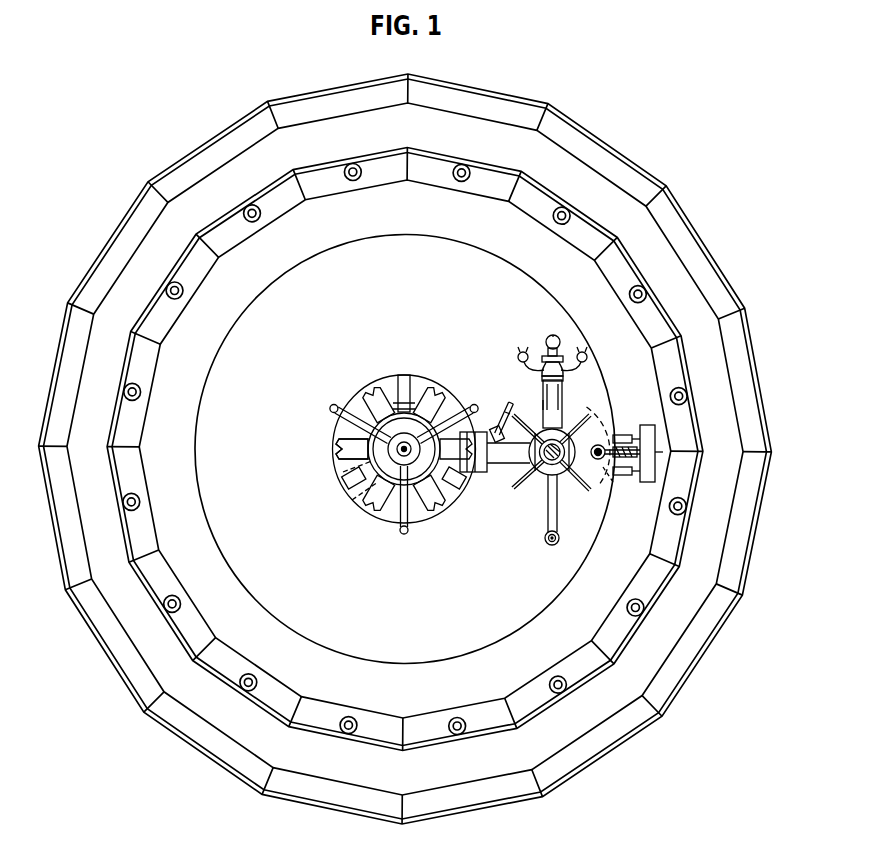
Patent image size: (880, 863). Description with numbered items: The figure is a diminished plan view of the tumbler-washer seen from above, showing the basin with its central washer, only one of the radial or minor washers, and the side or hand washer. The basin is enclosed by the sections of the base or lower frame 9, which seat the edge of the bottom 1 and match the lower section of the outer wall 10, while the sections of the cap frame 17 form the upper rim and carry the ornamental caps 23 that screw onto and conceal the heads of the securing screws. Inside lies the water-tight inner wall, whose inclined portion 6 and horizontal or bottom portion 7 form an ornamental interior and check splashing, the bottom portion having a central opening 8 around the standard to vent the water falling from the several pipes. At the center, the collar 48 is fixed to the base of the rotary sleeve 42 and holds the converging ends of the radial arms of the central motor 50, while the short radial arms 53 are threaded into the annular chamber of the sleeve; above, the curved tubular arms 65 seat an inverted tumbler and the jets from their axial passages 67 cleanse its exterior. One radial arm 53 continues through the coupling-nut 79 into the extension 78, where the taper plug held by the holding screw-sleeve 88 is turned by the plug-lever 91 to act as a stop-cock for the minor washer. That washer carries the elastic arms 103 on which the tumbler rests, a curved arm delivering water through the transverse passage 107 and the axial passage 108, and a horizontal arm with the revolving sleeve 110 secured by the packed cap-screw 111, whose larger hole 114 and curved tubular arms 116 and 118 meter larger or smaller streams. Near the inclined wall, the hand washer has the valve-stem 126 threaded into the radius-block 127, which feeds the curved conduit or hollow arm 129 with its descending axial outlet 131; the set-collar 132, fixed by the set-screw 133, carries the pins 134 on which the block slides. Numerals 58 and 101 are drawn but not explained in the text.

The bottom 1 is at (404, 449).
The inclined portion of inner wall 6 is at (405, 449).
The horizontal or bottom portion of inner wall 7 is at (404, 449).
The central opening 8 is at (337, 453).
The sections of the base or lower frame 9 is at (405, 449).
The lower section of the outer wall 10 is at (404, 448).
The sections of the upper or cap frame 17 is at (405, 449).
The ornamental caps 23 is at (139, 496).
The sleeve 42 is at (354, 498).
The collar 48 is at (344, 475).
The radial arms of the central motor 50 is at (405, 478).
The short radial arms 53 is at (404, 449).
The hub ring 58 is at (404, 449).
The tubular arms 65 is at (337, 416).
The axial passage 67 is at (330, 408).
The extension 78 is at (485, 452).
The coupling-nut 79 is at (483, 468).
The holding screw-sleeve 88 is at (508, 415).
The plug-lever 91 is at (503, 397).
The secondary hub 101 is at (558, 470).
The elastic arms 103 is at (550, 451).
The transverse passage 107 is at (548, 501).
The axial passage 108 is at (559, 538).
The sleeve 110 is at (553, 381).
The packed cap-screw 111 is at (553, 329).
The larger hole 114 is at (543, 404).
The curved tubular arm 116 is at (525, 370).
The curved tubular arm 118 is at (580, 370).
The valve-stem 126 is at (618, 434).
The radius-block 127 is at (601, 445).
The curved conduit or hollow arm 129 is at (620, 486).
The descending axial outlet 131 is at (600, 444).
The set-collar 132 is at (645, 483).
The set-screw 133 is at (646, 425).
The pins 134 is at (626, 430).